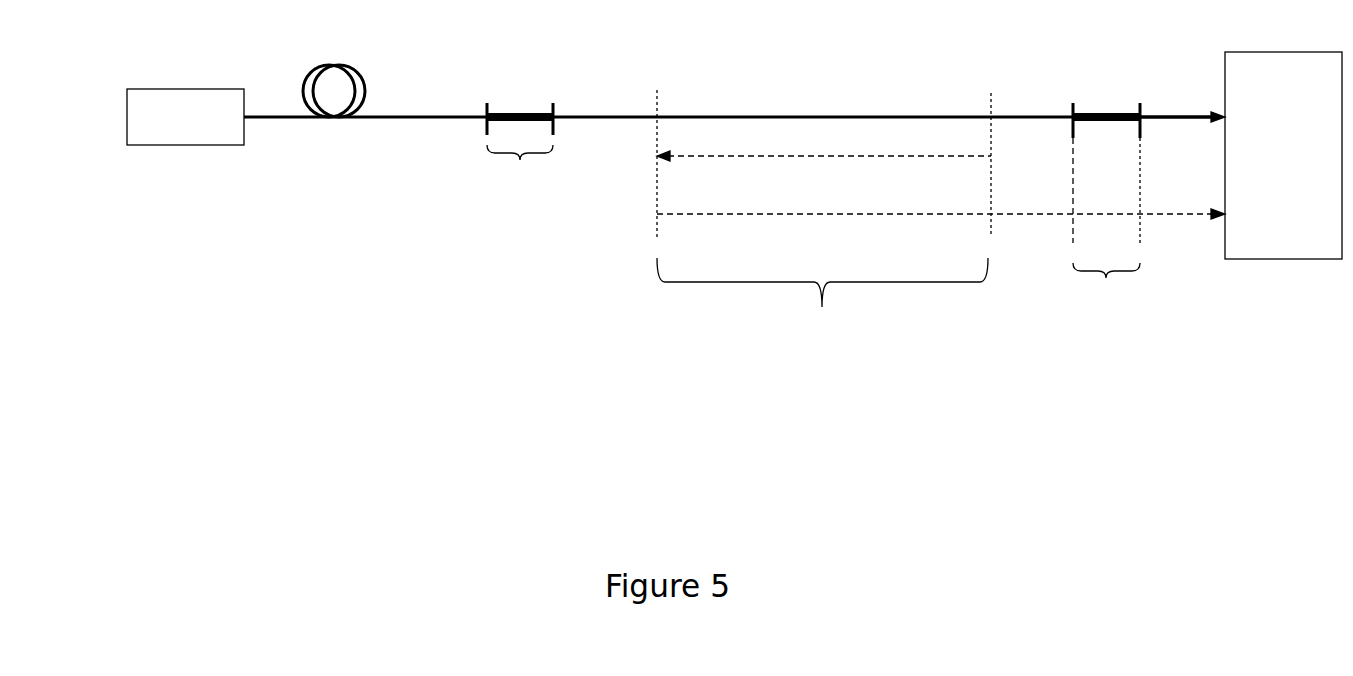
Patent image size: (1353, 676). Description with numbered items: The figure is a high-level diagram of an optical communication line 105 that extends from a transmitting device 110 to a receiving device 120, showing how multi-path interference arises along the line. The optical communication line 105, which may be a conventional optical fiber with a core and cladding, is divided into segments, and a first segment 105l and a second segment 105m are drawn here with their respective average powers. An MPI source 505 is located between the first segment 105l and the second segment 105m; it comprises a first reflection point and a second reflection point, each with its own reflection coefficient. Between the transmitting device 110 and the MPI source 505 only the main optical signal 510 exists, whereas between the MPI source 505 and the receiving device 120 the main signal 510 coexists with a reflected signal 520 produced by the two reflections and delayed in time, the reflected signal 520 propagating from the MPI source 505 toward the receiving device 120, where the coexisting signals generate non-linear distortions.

The transmitting device 110 is at (212, 132).
The optical communication line 105 is at (427, 115).
The first segment l of the optical communication line 105l is at (523, 108).
The second segment m of the optical communication line 105m is at (1108, 110).
The multi-path interference (MPI) source 505 is at (832, 199).
The main optical signal 510 is at (1200, 113).
The reflected signal 520 is at (1172, 217).
The receiving device 120 is at (1310, 180).